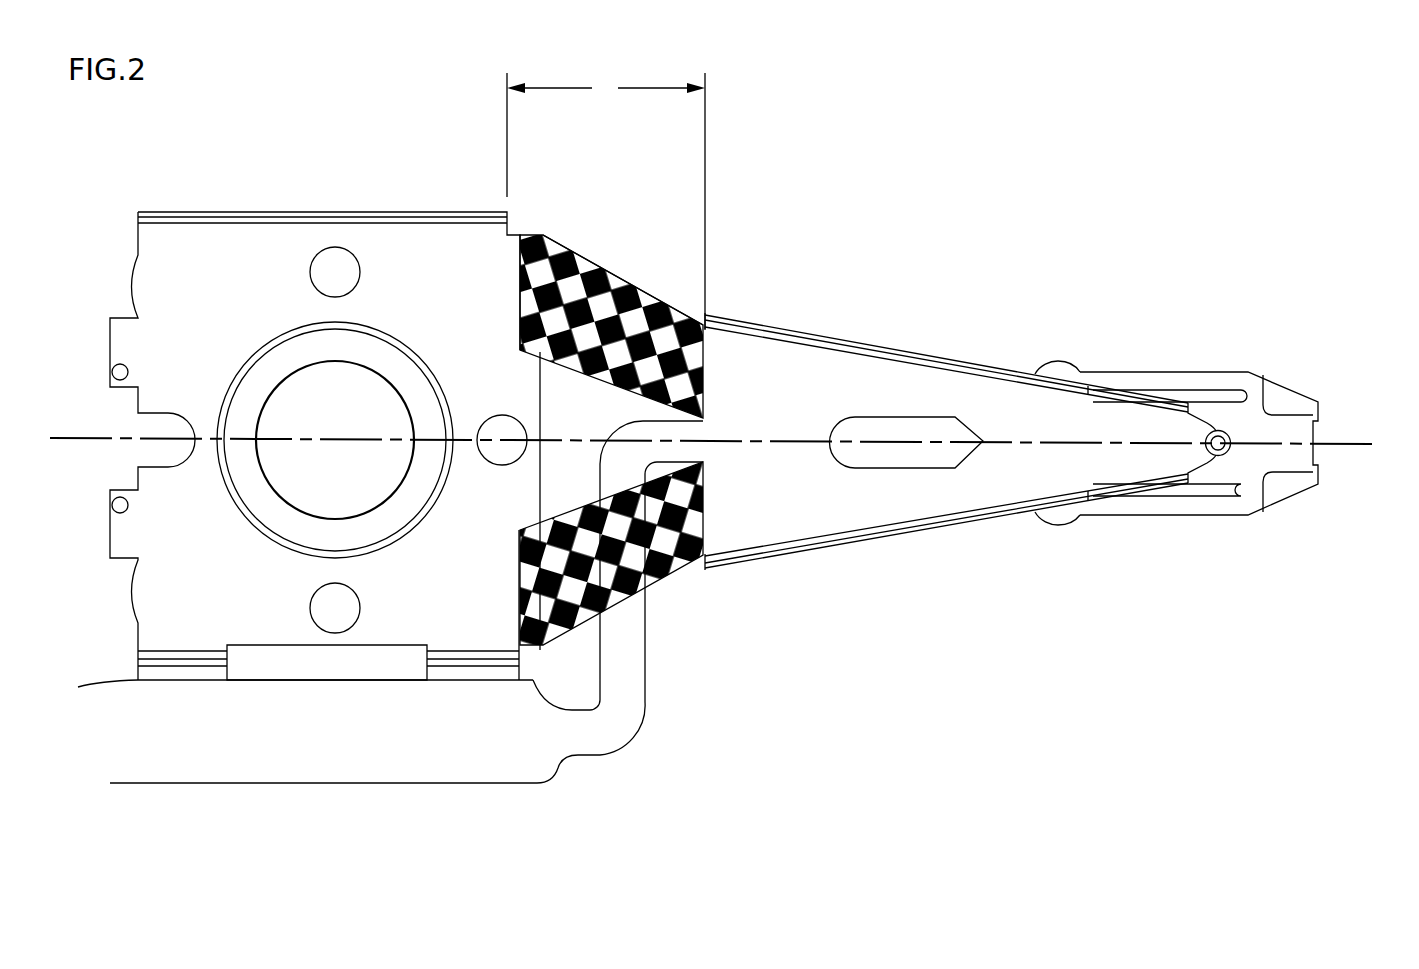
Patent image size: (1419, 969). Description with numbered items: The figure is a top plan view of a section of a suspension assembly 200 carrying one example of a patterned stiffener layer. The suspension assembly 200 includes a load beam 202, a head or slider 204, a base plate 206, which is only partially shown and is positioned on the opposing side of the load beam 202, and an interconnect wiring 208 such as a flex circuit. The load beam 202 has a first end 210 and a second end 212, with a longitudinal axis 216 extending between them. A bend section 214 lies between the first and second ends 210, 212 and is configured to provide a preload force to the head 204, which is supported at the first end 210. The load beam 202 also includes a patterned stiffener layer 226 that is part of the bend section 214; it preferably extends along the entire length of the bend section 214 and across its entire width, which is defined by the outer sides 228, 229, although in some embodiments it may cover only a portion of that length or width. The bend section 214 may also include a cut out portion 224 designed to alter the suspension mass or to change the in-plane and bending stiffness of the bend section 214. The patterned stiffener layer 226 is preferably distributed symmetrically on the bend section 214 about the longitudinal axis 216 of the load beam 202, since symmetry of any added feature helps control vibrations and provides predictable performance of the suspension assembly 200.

The suspension assembly 200 is at (1013, 130).
The load beam 202 is at (827, 326).
The head or slider 204 is at (1236, 425).
The base plate 206 is at (262, 500).
The interconnect wiring 208 is at (570, 772).
The first end 210 is at (1165, 352).
The second end 212 is at (331, 188).
The bend section 214 is at (618, 236).
The longitudinal axis 216 is at (1352, 446).
The cut out portion 224 is at (533, 493).
The patterned stiffener layer 226 is at (633, 306).
The outer side 228 is at (588, 262).
The outer side 229 is at (652, 587).